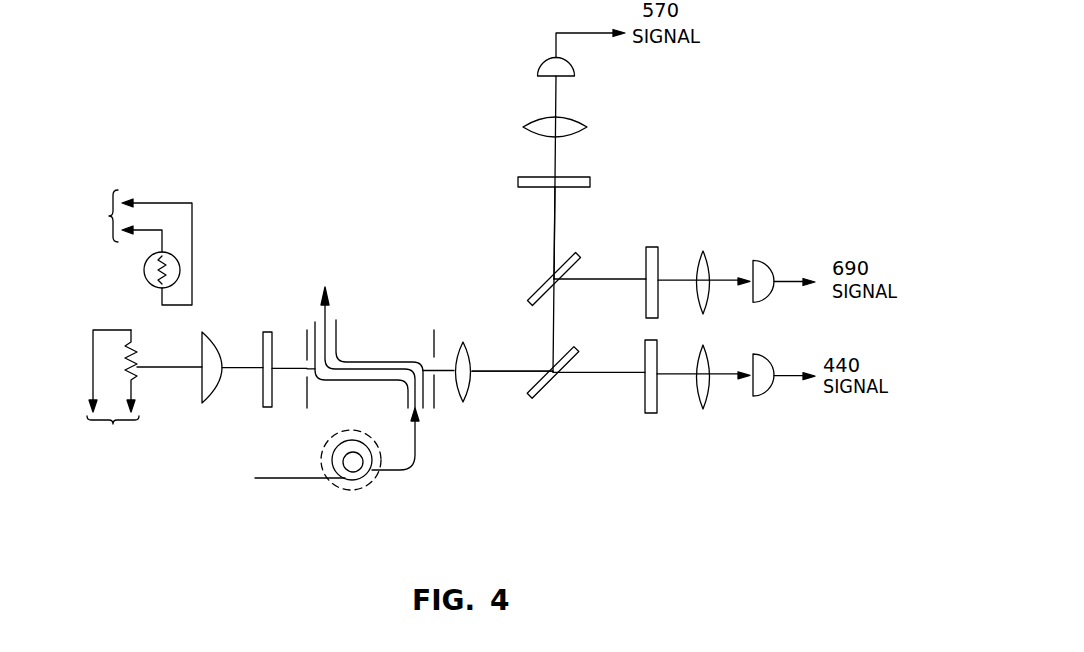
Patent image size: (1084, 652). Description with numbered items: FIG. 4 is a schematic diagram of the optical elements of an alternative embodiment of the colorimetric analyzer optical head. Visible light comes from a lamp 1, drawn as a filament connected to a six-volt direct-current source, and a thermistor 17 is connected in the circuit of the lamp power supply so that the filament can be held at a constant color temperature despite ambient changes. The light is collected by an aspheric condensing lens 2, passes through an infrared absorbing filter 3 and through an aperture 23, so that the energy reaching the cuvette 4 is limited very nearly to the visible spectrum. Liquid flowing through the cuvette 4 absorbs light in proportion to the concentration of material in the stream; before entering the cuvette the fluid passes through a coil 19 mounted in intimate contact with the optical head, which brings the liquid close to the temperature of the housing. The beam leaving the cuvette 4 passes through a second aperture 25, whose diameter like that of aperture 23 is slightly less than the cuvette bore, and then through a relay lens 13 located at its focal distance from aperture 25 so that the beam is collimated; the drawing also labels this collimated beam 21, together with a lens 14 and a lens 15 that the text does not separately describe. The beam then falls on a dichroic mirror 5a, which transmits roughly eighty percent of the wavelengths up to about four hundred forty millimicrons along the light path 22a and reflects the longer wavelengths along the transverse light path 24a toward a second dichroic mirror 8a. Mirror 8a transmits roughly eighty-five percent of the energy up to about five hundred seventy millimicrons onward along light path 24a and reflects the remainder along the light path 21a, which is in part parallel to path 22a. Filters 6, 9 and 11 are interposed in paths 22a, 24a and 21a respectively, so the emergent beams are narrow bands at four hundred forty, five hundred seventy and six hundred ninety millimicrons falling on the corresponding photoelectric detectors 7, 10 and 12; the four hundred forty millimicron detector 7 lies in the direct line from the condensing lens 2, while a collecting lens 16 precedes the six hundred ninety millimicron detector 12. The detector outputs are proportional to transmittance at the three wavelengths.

The lamp 1 is at (135, 382).
The aspheric condensing lens 2 is at (206, 334).
The infrared absorbing filter 3 is at (274, 332).
The cuvette 4 is at (371, 361).
The dichroic mirror 5a is at (541, 392).
The filter 6 is at (650, 414).
The photoelectric detector 7 is at (757, 397).
The dichroic mirror 8a is at (537, 286).
The filter 9 is at (592, 182).
The photoelectric detector 10 is at (576, 73).
The filter 11 is at (659, 249).
The photoelectric detector 12 is at (762, 262).
The relay lens 13 is at (466, 386).
The lens 14 is at (703, 411).
The lens 15 is at (525, 126).
The collecting lens 16 is at (704, 254).
The thermistor 17 is at (144, 266).
The coil 19 is at (366, 480).
The light beam 21 is at (492, 371).
The light path 21a is at (587, 279).
The light path 22a is at (601, 379).
The aperture 23 is at (307, 394).
The light path 24a is at (553, 216).
The aperture 25 is at (435, 406).